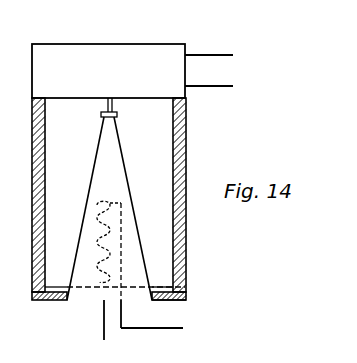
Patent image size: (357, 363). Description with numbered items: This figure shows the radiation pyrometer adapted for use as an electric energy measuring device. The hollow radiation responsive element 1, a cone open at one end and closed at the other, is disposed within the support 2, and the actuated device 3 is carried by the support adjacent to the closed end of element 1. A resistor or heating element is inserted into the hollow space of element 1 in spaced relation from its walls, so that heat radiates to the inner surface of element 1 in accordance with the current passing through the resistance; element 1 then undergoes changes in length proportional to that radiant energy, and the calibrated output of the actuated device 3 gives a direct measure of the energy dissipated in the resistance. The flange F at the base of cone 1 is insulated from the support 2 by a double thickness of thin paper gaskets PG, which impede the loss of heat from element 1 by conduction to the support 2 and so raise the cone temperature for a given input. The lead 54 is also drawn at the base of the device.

The radiation responsive element 1 is at (120, 146).
The support 2 is at (187, 149).
The actuated device 3 is at (110, 35).
The pipe / outlet 54 is at (80, 298).
The paper gaskets PG is at (186, 293).
The flange F is at (182, 304).